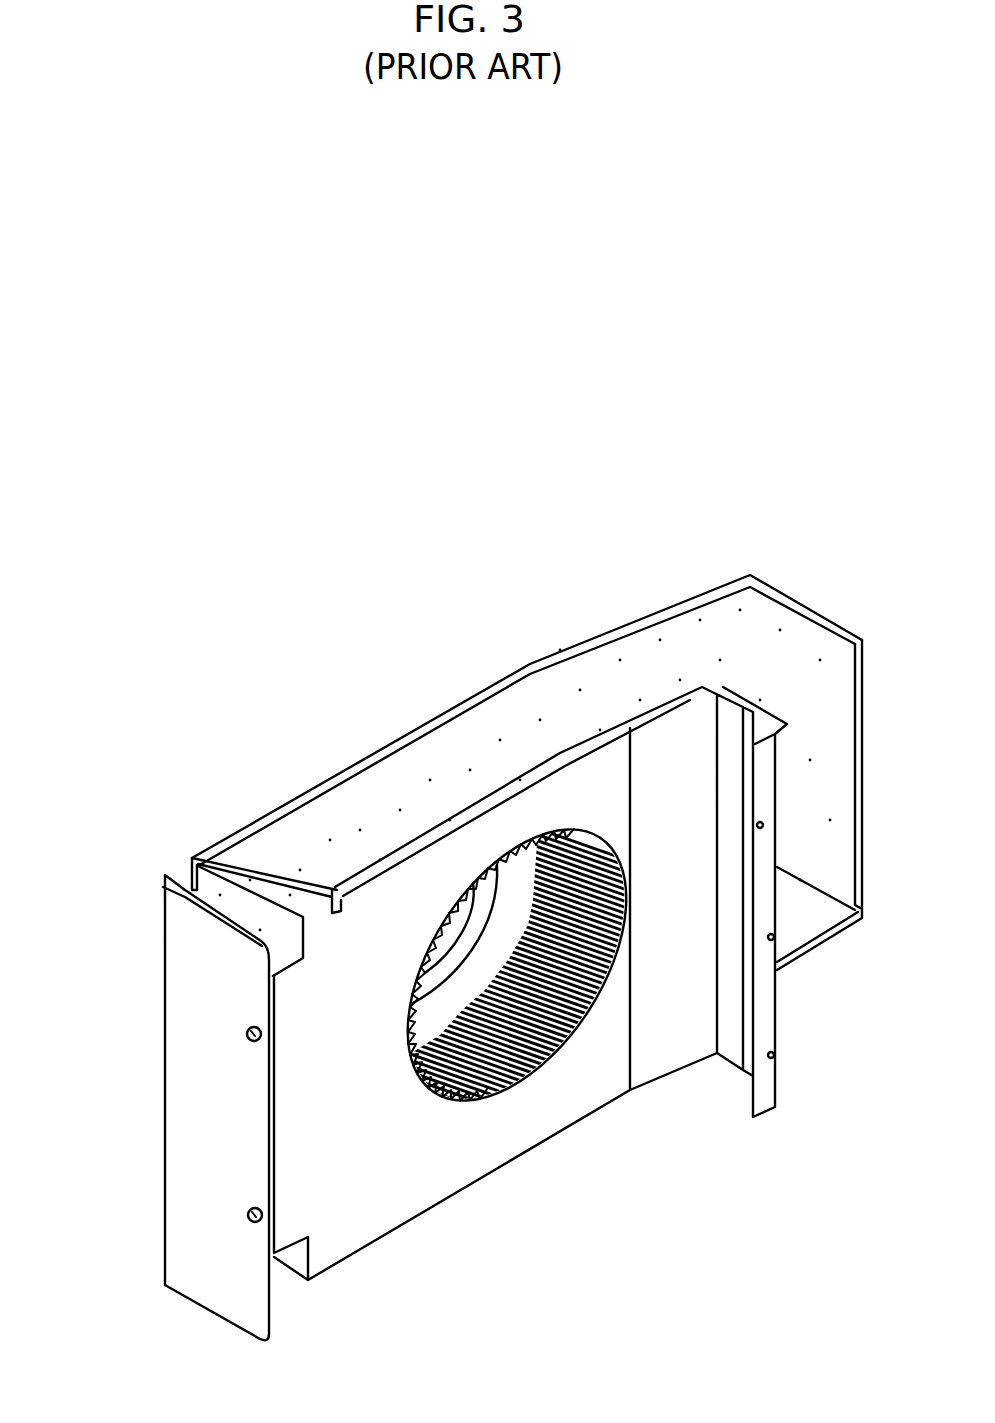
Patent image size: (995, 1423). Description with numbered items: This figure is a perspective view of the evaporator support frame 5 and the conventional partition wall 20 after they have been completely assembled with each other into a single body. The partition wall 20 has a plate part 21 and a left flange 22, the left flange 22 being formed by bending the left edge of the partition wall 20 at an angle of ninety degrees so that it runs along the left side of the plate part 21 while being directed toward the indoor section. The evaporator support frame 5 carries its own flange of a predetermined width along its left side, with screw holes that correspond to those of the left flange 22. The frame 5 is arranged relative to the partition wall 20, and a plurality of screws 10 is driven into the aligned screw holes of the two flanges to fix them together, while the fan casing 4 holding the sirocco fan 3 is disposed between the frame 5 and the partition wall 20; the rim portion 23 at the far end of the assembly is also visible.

The sirocco fan 3 is at (553, 1063).
The fan casing 4 is at (620, 660).
The evaporator support frame 5 is at (393, 1188).
The screw 10 is at (254, 1037).
The partition wall 20 is at (364, 740).
The plate part 21 is at (472, 700).
The left flange 22 is at (188, 974).
The end flange 23 is at (807, 603).